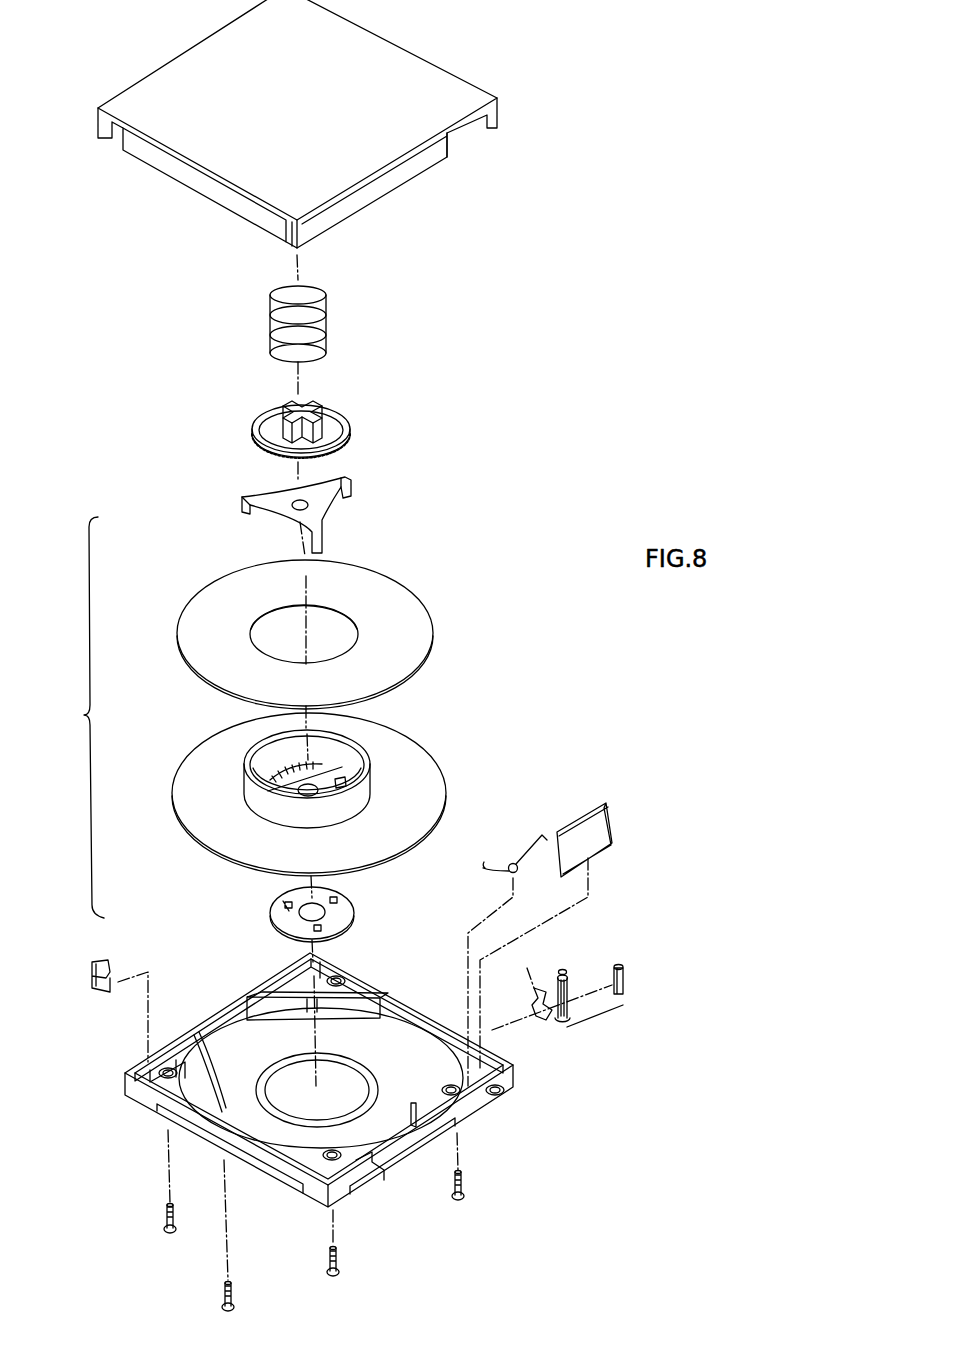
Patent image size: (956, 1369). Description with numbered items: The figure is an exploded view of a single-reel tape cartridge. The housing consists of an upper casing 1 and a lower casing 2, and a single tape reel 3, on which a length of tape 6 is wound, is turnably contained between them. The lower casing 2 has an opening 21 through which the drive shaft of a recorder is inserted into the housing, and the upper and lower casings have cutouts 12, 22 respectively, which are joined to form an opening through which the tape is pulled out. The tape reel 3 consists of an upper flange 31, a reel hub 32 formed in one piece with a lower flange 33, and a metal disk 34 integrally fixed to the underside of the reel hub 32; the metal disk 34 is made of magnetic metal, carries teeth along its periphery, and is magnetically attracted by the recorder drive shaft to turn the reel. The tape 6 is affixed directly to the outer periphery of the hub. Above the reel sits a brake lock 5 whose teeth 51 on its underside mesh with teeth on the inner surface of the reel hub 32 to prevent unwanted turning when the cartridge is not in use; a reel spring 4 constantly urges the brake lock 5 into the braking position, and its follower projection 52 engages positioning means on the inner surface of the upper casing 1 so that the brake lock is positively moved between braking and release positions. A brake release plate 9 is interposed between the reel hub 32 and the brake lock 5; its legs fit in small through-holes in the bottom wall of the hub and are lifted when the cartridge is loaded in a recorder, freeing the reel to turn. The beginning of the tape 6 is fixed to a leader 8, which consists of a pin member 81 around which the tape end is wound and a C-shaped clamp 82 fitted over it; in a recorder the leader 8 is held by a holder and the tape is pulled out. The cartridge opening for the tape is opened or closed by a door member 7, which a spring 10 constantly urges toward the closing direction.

The upper casing 1 is at (186, 66).
The cutout 12 is at (470, 146).
The reel spring 4 is at (272, 311).
The brake lock 5 is at (262, 425).
The follower projection 52 is at (312, 402).
The teeth 51 is at (330, 455).
The brake release plate 9 is at (264, 500).
The tape reel 3 is at (80, 717).
The upper flange 31 is at (235, 583).
The reel hub 32 is at (248, 795).
The lower flange 33 is at (205, 818).
The metal disk 34 is at (273, 912).
The spring 10 is at (536, 842).
The door member 7 is at (583, 828).
The tape 6 is at (532, 984).
The pin member 81 is at (562, 969).
The C-shaped clamp 82 is at (618, 965).
The leader 8 is at (595, 1029).
The lower casing 2 is at (134, 1096).
The opening 21 is at (340, 1100).
The cutout 22 is at (492, 1104).